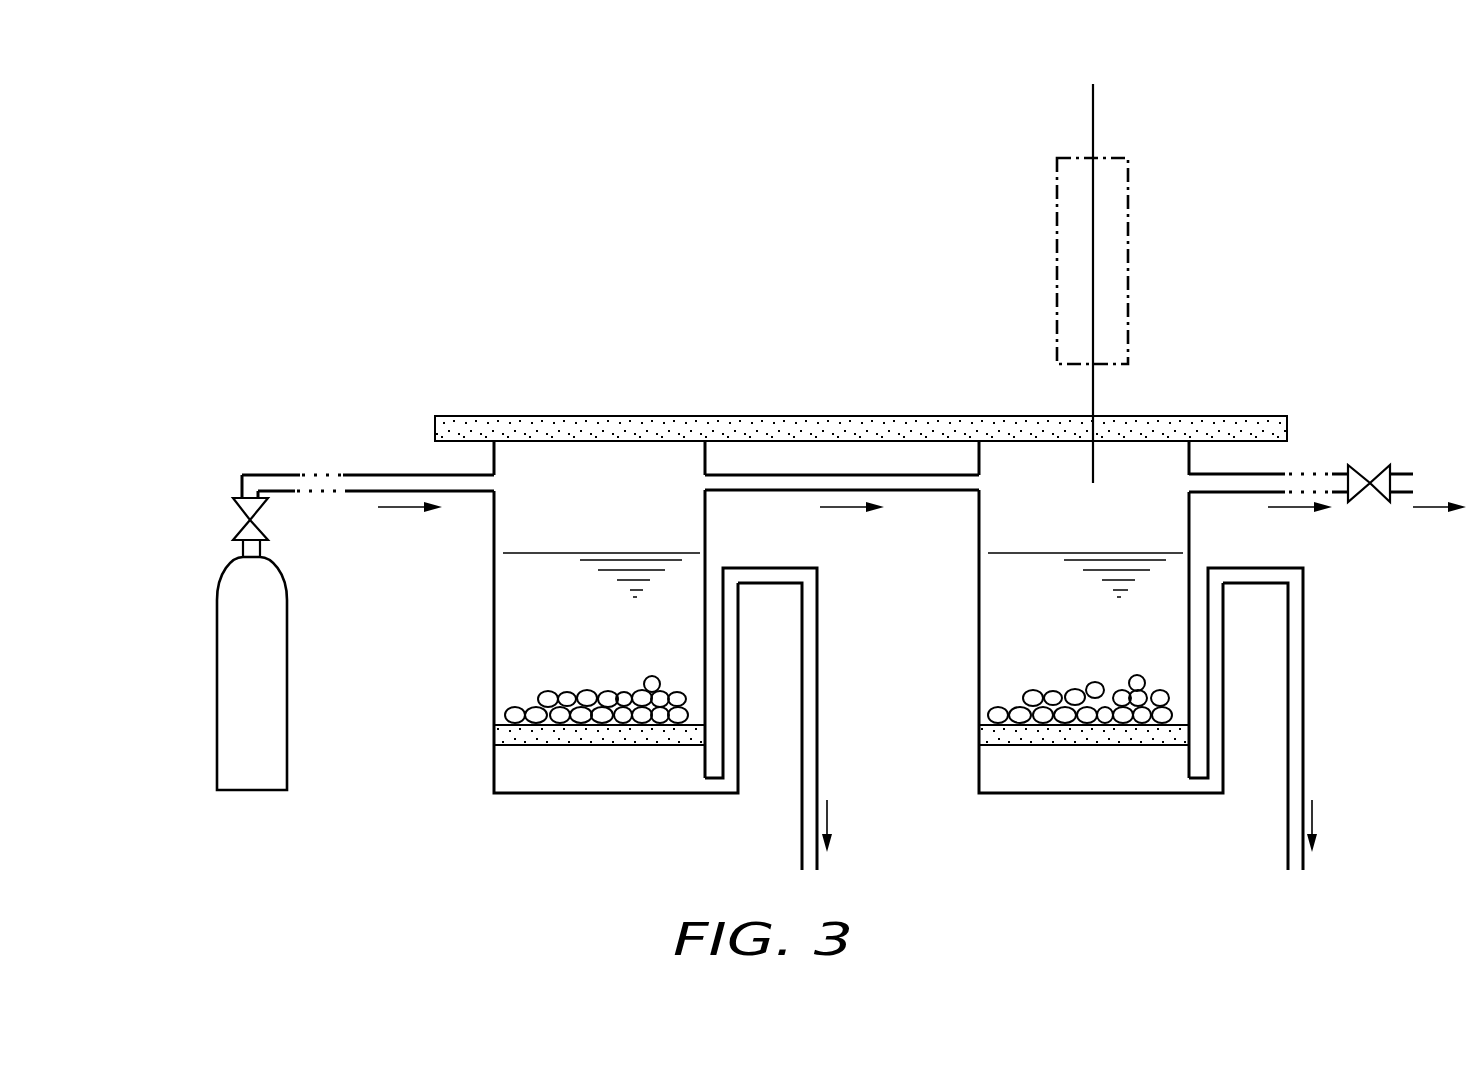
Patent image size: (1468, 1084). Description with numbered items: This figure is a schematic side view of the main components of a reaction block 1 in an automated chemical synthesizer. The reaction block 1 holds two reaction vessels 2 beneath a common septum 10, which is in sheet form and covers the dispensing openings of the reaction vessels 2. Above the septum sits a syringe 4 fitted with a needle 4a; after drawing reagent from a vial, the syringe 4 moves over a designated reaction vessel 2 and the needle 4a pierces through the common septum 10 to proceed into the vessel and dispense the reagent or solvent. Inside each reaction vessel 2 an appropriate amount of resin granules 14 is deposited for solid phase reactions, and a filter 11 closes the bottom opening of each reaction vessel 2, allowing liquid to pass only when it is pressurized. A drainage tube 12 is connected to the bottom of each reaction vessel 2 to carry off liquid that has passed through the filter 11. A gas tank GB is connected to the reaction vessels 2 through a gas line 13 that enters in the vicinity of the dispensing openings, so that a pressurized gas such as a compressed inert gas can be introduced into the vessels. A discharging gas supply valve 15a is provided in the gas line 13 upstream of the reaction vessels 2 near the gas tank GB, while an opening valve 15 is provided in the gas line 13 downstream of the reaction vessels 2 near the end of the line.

The reaction block 1 is at (838, 372).
The reaction vessel 2 is at (468, 718).
The syringe 4 is at (1128, 261).
The needle 4a is at (1093, 392).
The common septum 10 is at (902, 425).
The filter 11 is at (597, 737).
The drainage tube 12 is at (818, 732).
The gas line 13 is at (465, 493).
The resin granules 14 is at (548, 695).
The opening valve 15 is at (1373, 502).
The discharging gas supply valve 15a is at (248, 522).
The gas tank GB is at (227, 753).